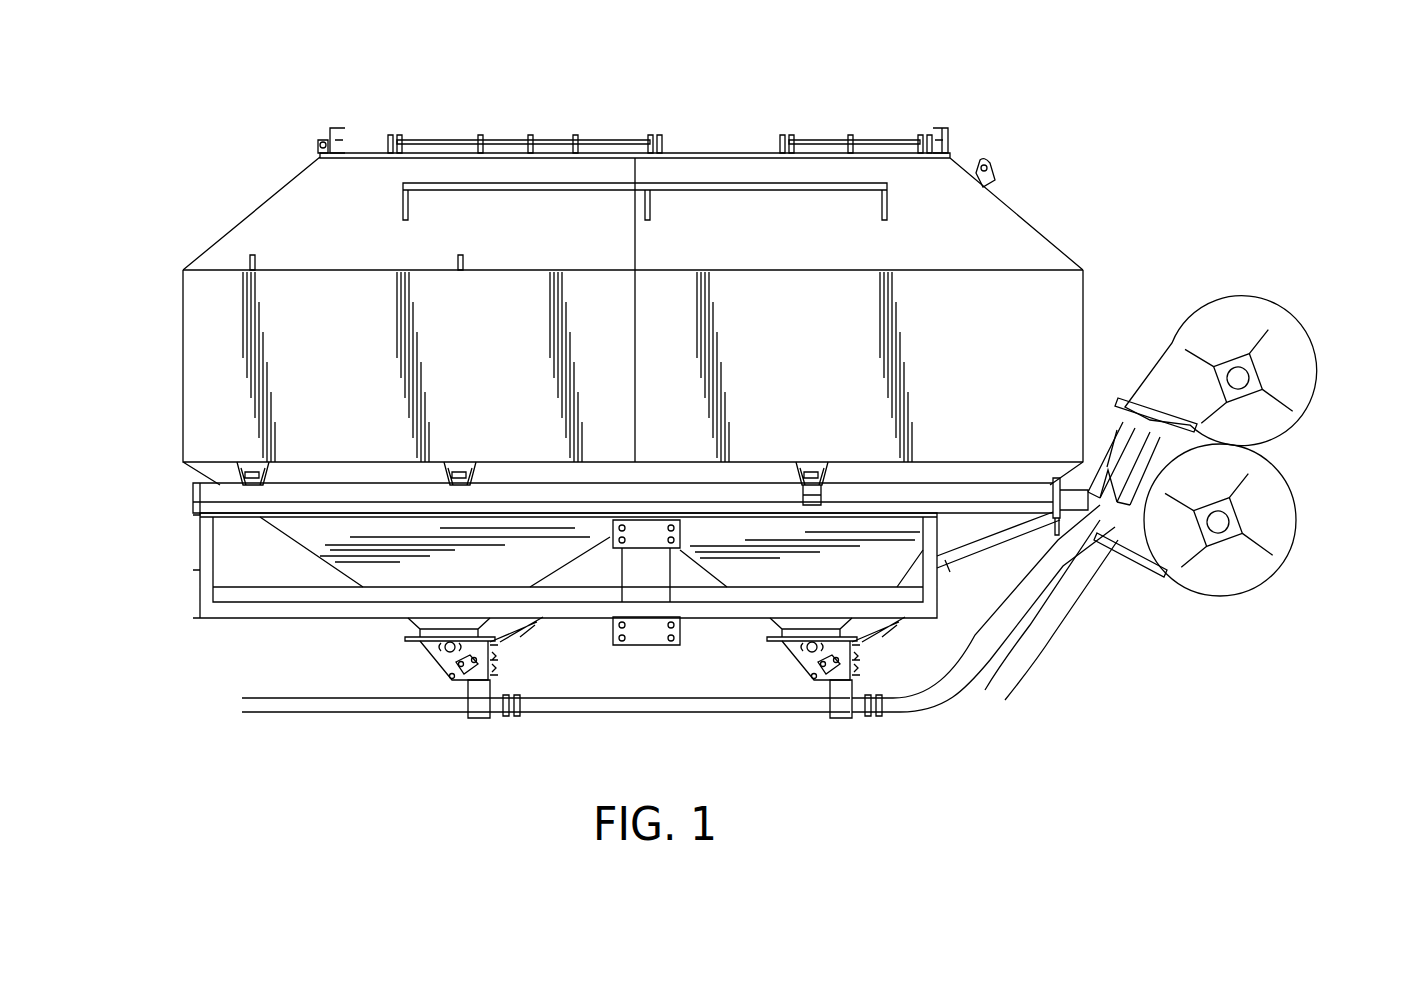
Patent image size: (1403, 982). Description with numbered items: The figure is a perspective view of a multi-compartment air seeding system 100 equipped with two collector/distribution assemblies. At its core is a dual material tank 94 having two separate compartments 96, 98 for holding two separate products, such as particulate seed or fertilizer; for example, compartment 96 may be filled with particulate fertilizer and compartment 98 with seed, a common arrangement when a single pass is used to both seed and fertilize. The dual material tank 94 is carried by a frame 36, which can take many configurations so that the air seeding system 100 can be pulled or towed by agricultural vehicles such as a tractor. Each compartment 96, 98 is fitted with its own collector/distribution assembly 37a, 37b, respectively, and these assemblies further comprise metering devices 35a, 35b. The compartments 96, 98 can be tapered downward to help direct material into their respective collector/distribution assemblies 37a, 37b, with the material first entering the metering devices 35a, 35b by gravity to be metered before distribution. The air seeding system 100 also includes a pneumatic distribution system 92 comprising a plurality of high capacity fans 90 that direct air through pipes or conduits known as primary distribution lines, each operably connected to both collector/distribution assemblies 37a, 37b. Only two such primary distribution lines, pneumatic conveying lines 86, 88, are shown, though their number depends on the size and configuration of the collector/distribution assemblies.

The air seeding system 100 is at (699, 107).
The compartment 96 is at (355, 330).
The compartment 98 is at (918, 328).
The dual material tank 94 is at (1045, 335).
The frame 36 is at (205, 553).
The metering device 35a is at (440, 660).
The metering device 35b is at (805, 660).
The collector/distribution assembly 37a is at (482, 705).
The collector/distribution assembly 37b is at (845, 705).
The pneumatic conveying line 86 is at (1030, 648).
The pneumatic conveying line 88 is at (1035, 605).
The high capacity fan 90 is at (1258, 312).
The pneumatic distribution system 92 is at (1283, 468).